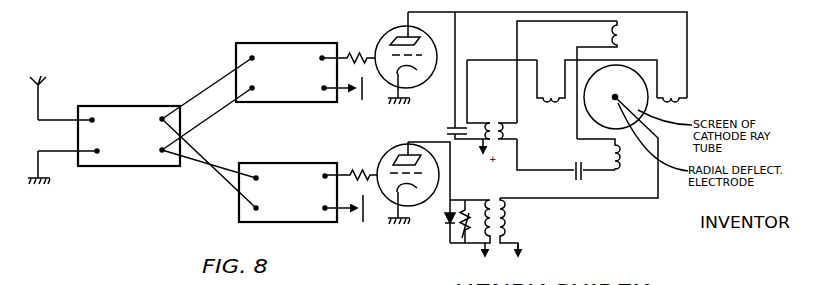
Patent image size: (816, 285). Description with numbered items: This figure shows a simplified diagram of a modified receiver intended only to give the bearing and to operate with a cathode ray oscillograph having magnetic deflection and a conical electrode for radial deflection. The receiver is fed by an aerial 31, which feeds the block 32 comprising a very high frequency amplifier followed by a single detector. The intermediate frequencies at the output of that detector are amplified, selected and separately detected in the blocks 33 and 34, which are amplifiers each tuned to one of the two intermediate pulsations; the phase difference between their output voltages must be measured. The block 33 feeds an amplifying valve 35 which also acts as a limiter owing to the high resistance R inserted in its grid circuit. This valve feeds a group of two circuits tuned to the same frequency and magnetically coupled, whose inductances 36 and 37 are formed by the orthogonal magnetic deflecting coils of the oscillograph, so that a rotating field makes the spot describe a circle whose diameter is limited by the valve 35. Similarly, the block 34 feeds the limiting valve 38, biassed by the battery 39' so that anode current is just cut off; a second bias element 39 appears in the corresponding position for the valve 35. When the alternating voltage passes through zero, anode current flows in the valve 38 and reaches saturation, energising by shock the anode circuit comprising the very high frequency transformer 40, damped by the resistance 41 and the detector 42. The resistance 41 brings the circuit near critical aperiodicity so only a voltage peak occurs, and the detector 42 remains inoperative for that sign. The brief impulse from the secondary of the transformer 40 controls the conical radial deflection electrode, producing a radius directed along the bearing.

The aerial 31 is at (38, 119).
The block 32 is at (107, 105).
The block 33 is at (268, 43).
The block 34 is at (275, 163).
The amplifying valve 35 is at (419, 40).
The inductance 36 is at (619, 33).
The inductance 37 is at (667, 100).
The limiting valve 38 is at (393, 149).
The adjustable contact 39 is at (343, 100).
The battery 39' is at (344, 218).
The very high frequency transformer 40 is at (511, 217).
The resistance 41 is at (472, 244).
The detector 42 is at (449, 236).
The high resistance R is at (363, 49).